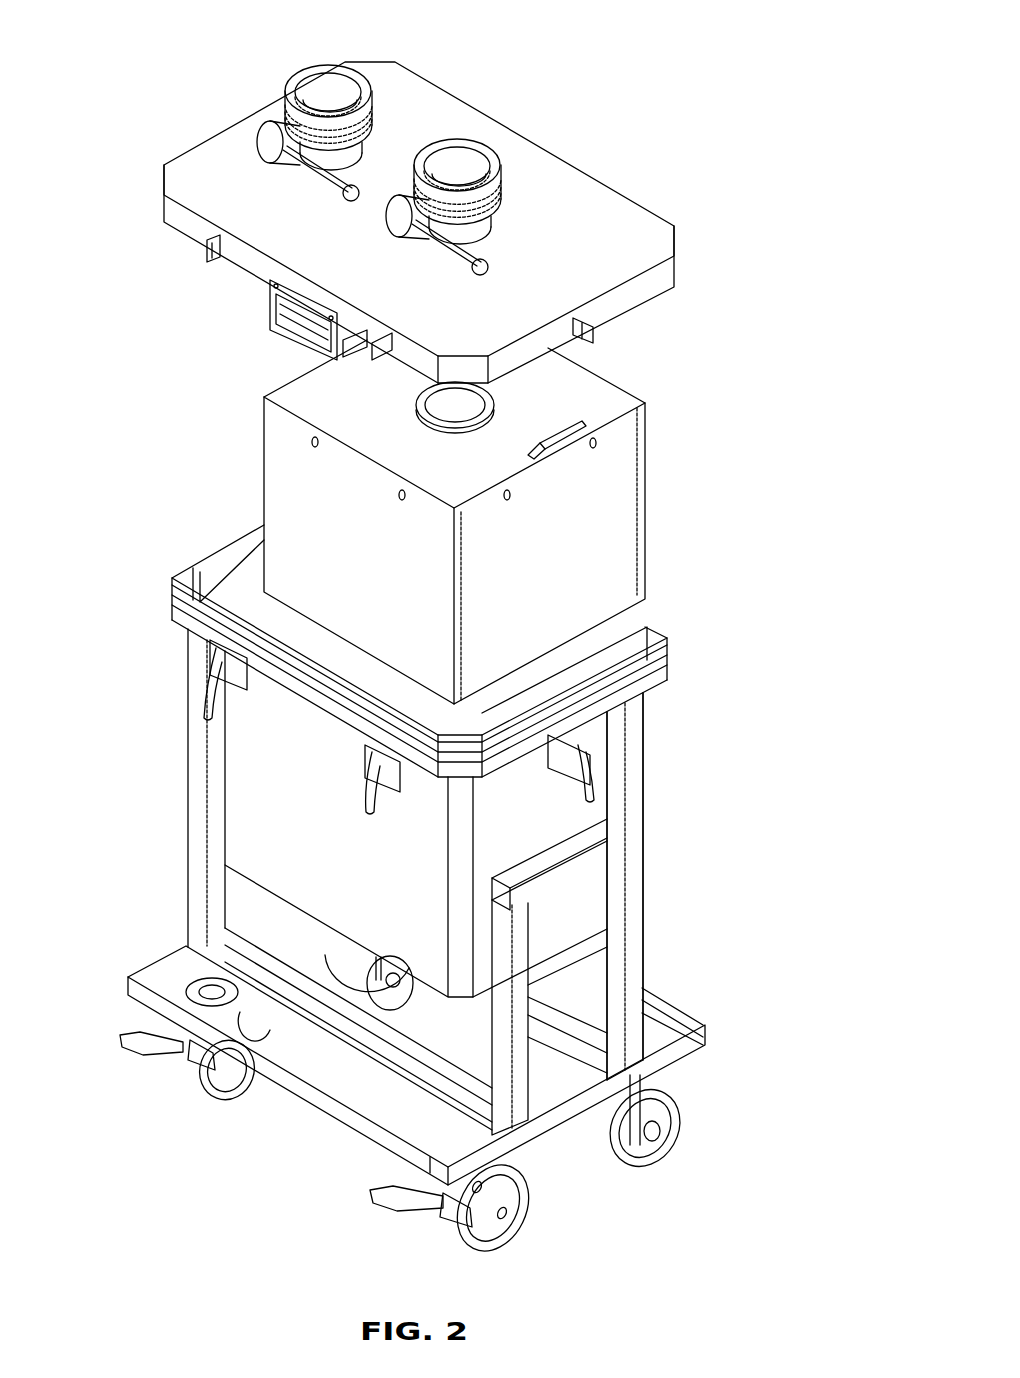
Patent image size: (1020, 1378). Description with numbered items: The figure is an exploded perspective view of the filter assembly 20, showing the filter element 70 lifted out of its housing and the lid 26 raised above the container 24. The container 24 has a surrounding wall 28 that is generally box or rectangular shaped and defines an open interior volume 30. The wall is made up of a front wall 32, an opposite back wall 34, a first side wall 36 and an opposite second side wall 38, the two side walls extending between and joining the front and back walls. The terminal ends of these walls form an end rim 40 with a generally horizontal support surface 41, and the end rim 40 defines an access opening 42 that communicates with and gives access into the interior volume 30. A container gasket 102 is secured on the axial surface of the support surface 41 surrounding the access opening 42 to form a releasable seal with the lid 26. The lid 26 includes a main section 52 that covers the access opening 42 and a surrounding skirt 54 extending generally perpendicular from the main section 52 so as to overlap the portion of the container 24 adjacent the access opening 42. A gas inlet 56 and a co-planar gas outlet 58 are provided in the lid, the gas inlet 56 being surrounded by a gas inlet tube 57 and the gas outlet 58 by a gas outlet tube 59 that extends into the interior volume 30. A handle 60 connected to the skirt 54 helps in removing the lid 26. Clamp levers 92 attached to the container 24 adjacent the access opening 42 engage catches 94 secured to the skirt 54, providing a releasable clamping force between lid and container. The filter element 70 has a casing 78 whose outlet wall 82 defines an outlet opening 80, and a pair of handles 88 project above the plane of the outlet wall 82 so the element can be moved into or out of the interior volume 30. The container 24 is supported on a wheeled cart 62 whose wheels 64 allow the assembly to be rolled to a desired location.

The filter assembly 20 is at (618, 136).
The container 24 is at (416, 854).
The lid 26 is at (427, 196).
The surrounding wall 28 is at (640, 811).
The interior volume 30 is at (421, 651).
The front wall 32 is at (394, 903).
The back wall 34 is at (653, 772).
The first side wall 36 is at (514, 851).
The second side wall 38 is at (183, 756).
The end rim 40 is at (682, 652).
The support surface 41 is at (178, 588).
The access opening 42 is at (662, 627).
The main section 52 is at (557, 283).
The skirt 54 is at (668, 284).
The gas inlet 56 is at (308, 72).
The gas inlet tube 57 is at (368, 98).
The gas outlet 58 is at (455, 142).
The gas outlet tube 59 is at (498, 170).
The handle 60 is at (268, 318).
The wheeled cart 62 is at (642, 950).
The wheels 64 is at (190, 1080).
The filter element 70 is at (522, 522).
The casing 78 is at (630, 528).
The outlet opening 80 is at (420, 400).
The outlet wall 82 is at (600, 410).
The handles 88 is at (556, 466).
The clamp levers 92 is at (200, 700).
The catches 94 is at (205, 251).
The container gasket 102 is at (650, 676).